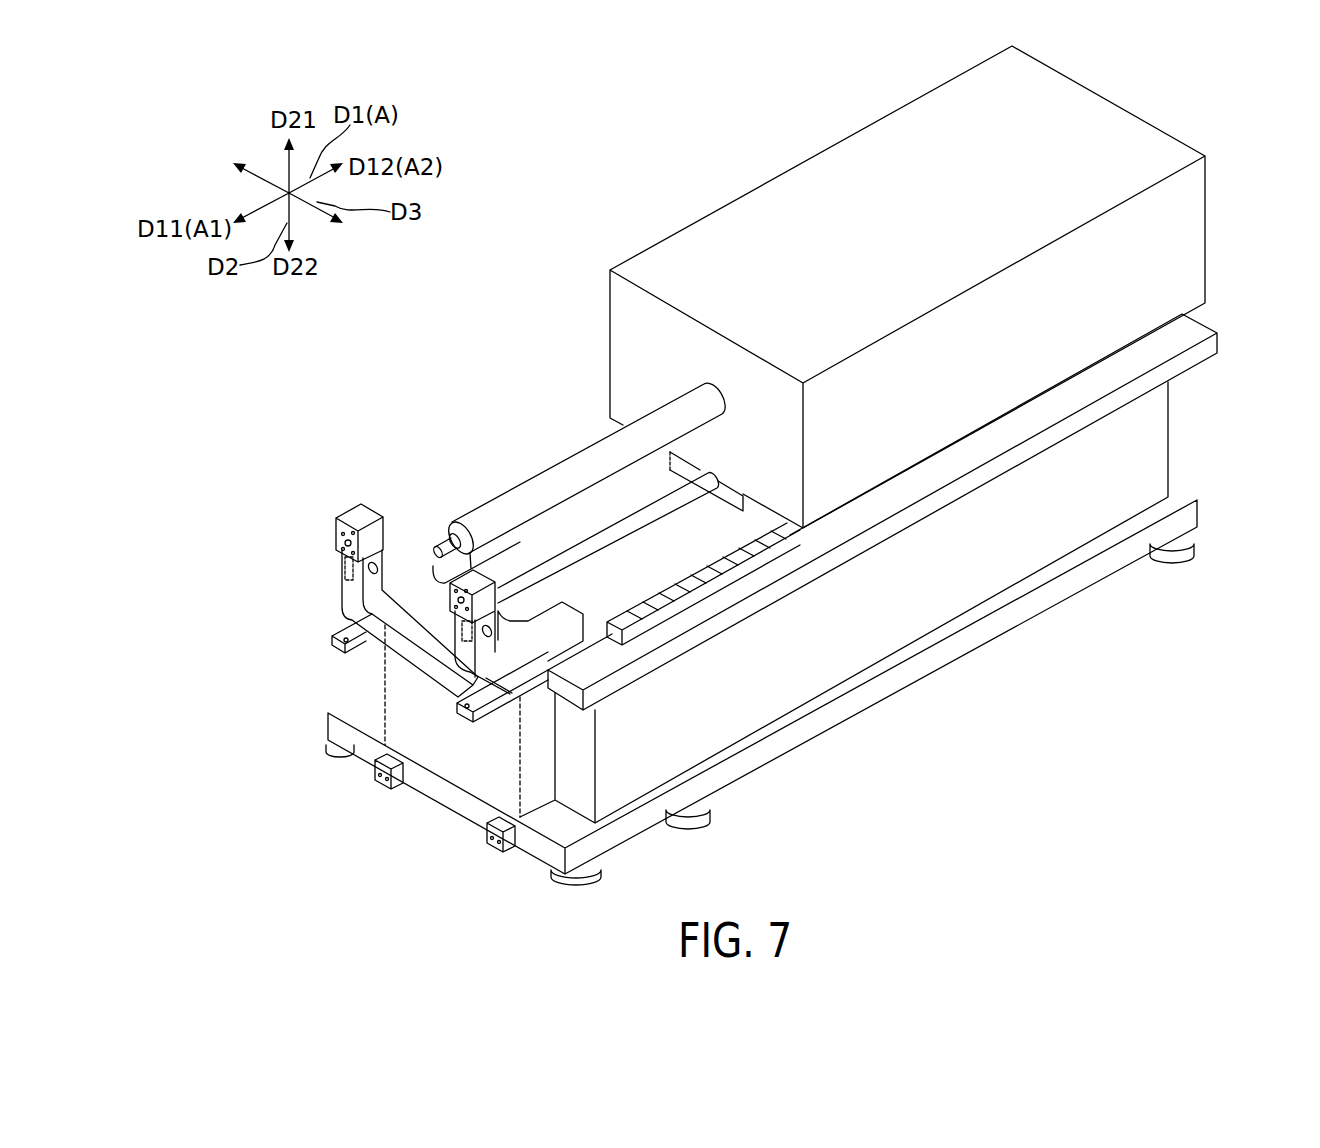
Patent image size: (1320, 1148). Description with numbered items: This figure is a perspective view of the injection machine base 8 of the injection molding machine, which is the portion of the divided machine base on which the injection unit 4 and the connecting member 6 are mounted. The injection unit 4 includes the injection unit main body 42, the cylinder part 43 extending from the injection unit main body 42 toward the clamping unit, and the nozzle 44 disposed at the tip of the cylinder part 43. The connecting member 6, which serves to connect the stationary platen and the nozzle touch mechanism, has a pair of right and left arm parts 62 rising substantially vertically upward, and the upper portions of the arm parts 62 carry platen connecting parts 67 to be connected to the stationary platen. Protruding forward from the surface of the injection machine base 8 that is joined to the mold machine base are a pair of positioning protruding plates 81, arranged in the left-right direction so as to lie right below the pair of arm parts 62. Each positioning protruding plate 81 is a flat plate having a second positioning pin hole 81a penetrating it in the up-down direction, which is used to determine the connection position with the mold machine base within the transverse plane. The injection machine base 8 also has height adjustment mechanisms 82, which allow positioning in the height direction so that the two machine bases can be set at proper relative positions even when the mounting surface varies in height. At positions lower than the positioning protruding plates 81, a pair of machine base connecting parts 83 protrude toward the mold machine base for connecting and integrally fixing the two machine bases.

The injection unit 4 is at (527, 210).
The injection unit main body 42 is at (780, 182).
The cylinder part 43 is at (553, 478).
The nozzle 44 is at (440, 545).
The connecting member 6 is at (360, 484).
The arm parts 62 is at (345, 587).
The platen connecting parts 67 is at (333, 530).
The injection machine base 8 is at (1158, 437).
The positioning protruding plate 81 is at (334, 645).
The second positioning pin hole 81a is at (344, 639).
The height adjustment mechanism 82 is at (330, 750).
The machine base connecting part 83 is at (487, 848).